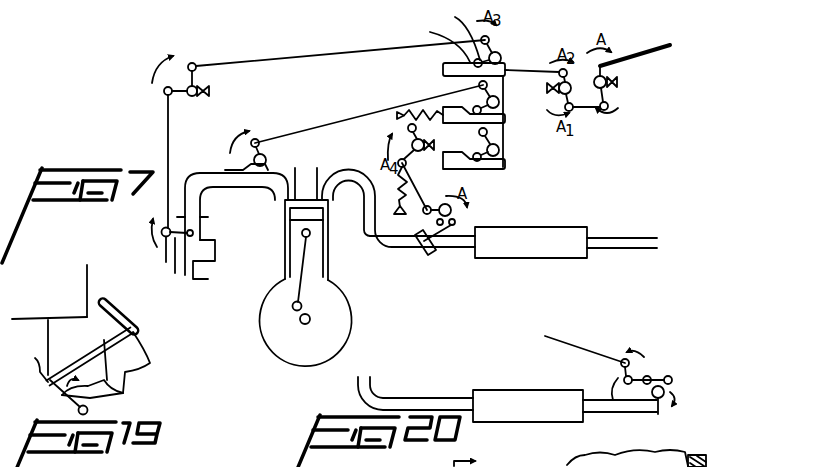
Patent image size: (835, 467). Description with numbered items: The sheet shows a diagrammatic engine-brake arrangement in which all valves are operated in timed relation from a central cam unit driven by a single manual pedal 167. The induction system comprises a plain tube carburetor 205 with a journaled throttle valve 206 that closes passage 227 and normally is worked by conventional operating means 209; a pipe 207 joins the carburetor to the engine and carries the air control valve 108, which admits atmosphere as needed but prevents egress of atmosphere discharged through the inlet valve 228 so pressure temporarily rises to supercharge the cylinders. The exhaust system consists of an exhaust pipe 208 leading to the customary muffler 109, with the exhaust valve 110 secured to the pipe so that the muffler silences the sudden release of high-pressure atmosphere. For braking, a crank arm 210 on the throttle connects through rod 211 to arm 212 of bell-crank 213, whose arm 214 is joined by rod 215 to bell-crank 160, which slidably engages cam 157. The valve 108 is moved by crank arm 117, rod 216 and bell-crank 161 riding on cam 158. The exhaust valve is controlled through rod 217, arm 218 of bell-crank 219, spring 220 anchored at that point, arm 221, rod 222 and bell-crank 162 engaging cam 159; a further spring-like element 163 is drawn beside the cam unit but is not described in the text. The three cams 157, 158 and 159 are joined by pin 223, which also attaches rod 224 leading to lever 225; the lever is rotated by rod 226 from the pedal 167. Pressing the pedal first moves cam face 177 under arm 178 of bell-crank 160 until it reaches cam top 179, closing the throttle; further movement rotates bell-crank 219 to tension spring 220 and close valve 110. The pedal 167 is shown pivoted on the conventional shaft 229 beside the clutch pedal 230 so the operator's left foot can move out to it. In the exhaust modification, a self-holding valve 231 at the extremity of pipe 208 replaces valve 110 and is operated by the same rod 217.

In FIG. 7, the air control valve 108 is at (268, 155).
In FIG. 7, the muffler 109 is at (521, 227).
In FIG. 7, the exhaust valve 110 is at (458, 212).
In FIG. 7, the crank arm 117 is at (287, 118).
In FIG. 7, the cam 157 is at (501, 57).
In FIG. 7, the cam 158 is at (510, 124).
In FIG. 7, the cam 159 is at (505, 170).
In FIG. 7, the bell-crank 160 is at (490, 40).
In FIG. 7, the bell-crank 161 is at (499, 93).
In FIG. 7, the bell-crank 162 is at (480, 135).
In FIG. 7, the spring 163 is at (426, 109).
In FIG. 7, the pedal 167 is at (642, 47).
In FIG. 7, the cam face 177 is at (434, 45).
In FIG. 7, the arm of bell-crank 178 is at (453, 35).
In FIG. 7, the top of cam 179 is at (411, 64).
In FIG. 7, the carburetor 205 is at (217, 248).
In FIG. 7, the throttle valve 206 is at (193, 231).
In FIG. 7, the pipe 207 is at (207, 170).
In FIG. 7, the exhaust pipe 208 is at (370, 247).
In FIG. 20, the exhaust pipe 208 is at (444, 398).
In FIG. 7, the conventional throttle operating means 209 is at (163, 262).
In FIG. 7, the crank arm 210 is at (176, 266).
In FIG. 7, the rod 211 is at (170, 127).
In FIG. 7, the arm of bell-crank 212 is at (181, 93).
In FIG. 7, the bell-crank 213 is at (210, 93).
In FIG. 7, the arm of bell-crank 214 is at (195, 79).
In FIG. 7, the rod 215 is at (280, 59).
In FIG. 7, the rod 216 is at (305, 128).
In FIG. 7, the rod 217 is at (414, 190).
In FIG. 20, the rod 217 is at (580, 353).
In FIG. 7, the arm of bell-crank 218 is at (405, 166).
In FIG. 7, the bell-crank 219 is at (411, 144).
In FIG. 7, the spring 220 is at (364, 198).
In FIG. 7, the arm of bell-crank 221 is at (410, 139).
In FIG. 7, the rod 222 is at (408, 126).
In FIG. 7, the pin 223 is at (500, 151).
In FIG. 7, the rod 224 is at (536, 65).
In FIG. 7, the lever 225 is at (500, 104).
In FIG. 7, the rod 226 is at (585, 112).
In FIG. 7, the passage 227 is at (216, 278).
In FIG. 7, the inlet valve 228 is at (320, 164).
In FIG. 19, the shaft 229 is at (78, 409).
In FIG. 19, the clutch pedal 230 is at (26, 366).
In FIG. 20, the modified exhaust valve 231 is at (677, 397).